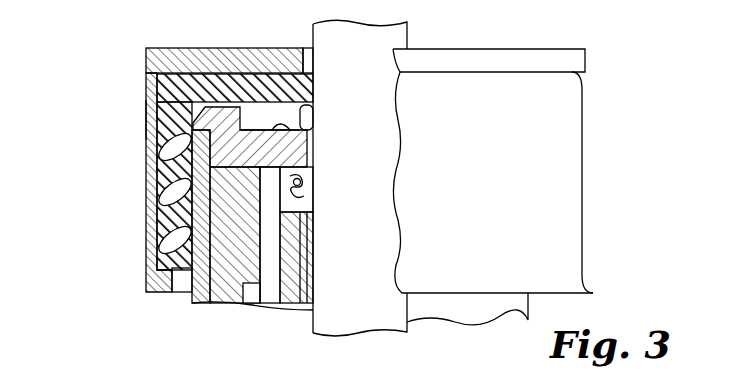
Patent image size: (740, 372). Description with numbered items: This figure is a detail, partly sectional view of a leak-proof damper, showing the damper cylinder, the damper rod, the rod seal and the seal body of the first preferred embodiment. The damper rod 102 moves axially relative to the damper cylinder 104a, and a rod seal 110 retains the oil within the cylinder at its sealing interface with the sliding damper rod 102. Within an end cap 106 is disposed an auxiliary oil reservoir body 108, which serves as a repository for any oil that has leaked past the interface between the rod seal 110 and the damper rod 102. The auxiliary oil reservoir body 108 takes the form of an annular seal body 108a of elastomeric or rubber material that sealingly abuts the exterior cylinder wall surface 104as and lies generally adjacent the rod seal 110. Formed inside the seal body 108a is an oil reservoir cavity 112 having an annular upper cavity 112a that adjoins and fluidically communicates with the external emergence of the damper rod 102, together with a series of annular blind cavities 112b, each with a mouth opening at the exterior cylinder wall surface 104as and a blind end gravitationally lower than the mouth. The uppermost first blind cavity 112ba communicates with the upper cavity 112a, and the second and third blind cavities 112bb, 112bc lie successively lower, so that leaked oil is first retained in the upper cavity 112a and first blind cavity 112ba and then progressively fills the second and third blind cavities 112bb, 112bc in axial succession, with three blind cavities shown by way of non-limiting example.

The damper rod 102 is at (410, 31).
The end cap 106 is at (146, 90).
The exterior cylinder wall surface 104as is at (147, 122).
The annular blind cavity 112b is at (114, 207).
The first blind cavity 112ba is at (166, 148).
The oil reservoir cavity 112 is at (173, 180).
The second blind cavity 112bb is at (166, 197).
The auxiliary oil reservoir body 108 is at (125, 182).
The annular seal body 108a is at (157, 216).
The third blind cavity 112bc is at (164, 262).
The damper cylinder 104a is at (185, 285).
The annular upper cavity 112a is at (270, 108).
The rod seal 110 is at (307, 149).